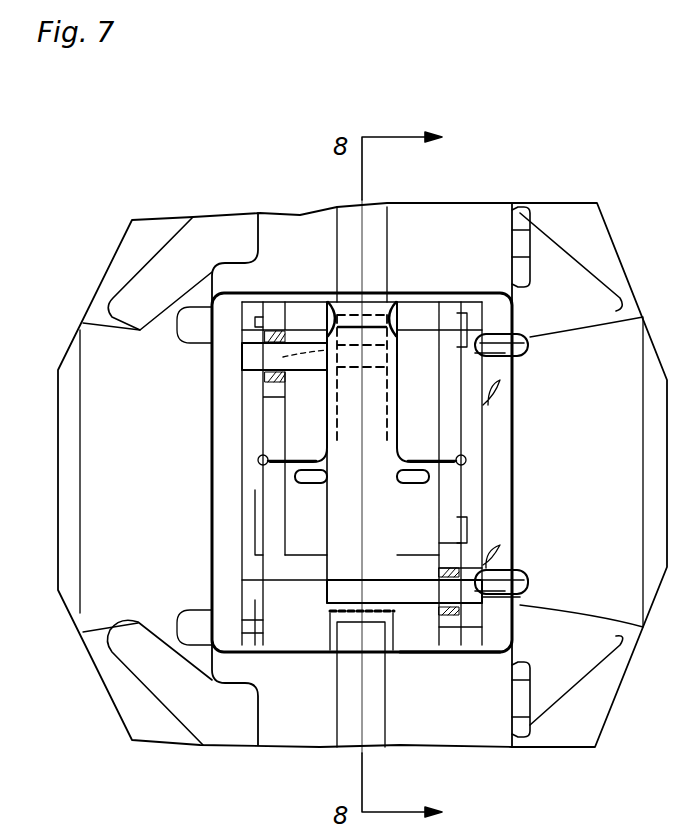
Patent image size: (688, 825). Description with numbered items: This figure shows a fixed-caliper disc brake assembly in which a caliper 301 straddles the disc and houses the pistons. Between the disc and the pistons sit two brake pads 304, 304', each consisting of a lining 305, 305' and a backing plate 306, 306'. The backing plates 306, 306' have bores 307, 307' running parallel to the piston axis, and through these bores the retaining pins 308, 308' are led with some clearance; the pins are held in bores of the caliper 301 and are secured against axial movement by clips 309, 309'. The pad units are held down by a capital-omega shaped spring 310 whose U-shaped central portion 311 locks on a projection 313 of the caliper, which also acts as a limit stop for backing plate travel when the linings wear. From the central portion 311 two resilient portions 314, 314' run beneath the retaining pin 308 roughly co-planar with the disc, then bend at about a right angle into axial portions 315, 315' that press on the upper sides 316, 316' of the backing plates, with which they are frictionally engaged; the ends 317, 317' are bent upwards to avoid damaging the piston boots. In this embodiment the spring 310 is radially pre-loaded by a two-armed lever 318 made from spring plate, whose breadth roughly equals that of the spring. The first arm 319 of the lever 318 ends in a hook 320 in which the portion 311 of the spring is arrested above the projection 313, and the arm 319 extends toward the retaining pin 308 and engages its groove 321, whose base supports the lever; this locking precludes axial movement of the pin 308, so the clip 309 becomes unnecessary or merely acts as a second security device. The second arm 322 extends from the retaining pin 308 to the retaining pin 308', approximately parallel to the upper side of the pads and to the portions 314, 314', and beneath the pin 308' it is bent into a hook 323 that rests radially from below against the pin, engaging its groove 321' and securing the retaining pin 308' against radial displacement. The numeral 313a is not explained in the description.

The caliper 301 is at (163, 243).
The brake pad 304 is at (362, 504).
The brake pad 304' is at (450, 679).
The lining 305 is at (232, 600).
The lining 305' is at (496, 567).
The backing plate 306 is at (212, 521).
The backing plate 306' is at (477, 511).
The bore 307 is at (233, 389).
The bore 307' is at (499, 624).
The retaining pin 308 is at (193, 357).
The retaining pin 308' is at (536, 598).
The clip 309 is at (515, 323).
The clip 309' is at (528, 573).
The spring 310 is at (322, 318).
The U-shaped central portion 311 is at (393, 300).
The projection 313 is at (353, 302).
The lower rod portion 313a is at (370, 643).
The resilient portion 314 is at (328, 382).
The resilient portion 314' is at (423, 382).
The axial portion 315 is at (307, 498).
The axial portion 315' is at (417, 501).
The upper side 316 is at (203, 389).
The upper side 316' is at (498, 473).
The end 317 is at (229, 481).
The end 317' is at (481, 438).
The lever 318 is at (400, 413).
The first arm 319 is at (295, 473).
The hook 320 is at (373, 313).
The groove 321 is at (284, 356).
The groove 321' is at (404, 593).
The second arm 322 is at (332, 545).
The hook 323 is at (330, 607).